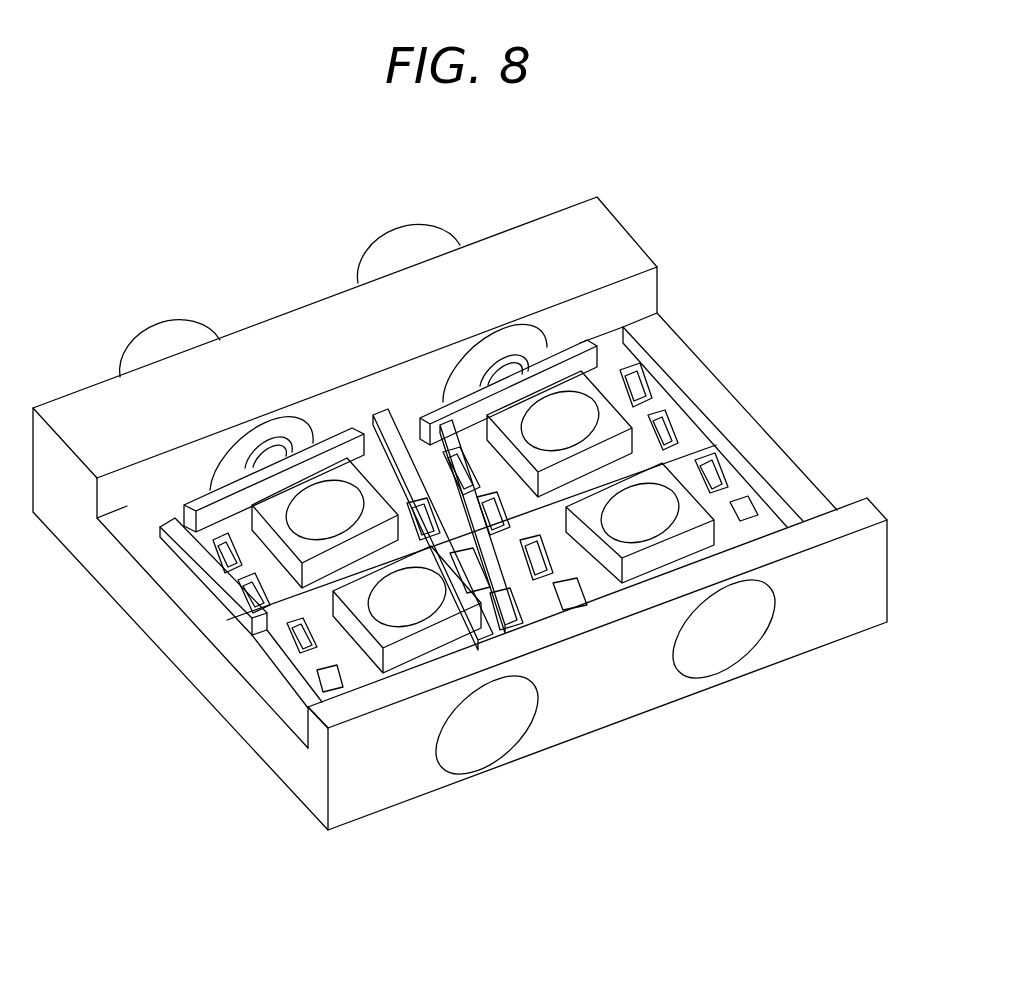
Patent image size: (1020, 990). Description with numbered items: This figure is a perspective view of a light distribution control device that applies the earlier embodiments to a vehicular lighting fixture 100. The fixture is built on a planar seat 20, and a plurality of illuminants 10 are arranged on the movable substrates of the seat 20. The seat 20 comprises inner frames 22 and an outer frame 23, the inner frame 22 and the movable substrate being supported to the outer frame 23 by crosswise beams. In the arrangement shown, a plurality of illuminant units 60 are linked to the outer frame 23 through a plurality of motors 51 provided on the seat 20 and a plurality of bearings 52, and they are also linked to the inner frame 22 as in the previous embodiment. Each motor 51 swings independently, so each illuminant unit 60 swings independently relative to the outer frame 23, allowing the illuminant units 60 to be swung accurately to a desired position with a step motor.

The vehicular lighting fixture 100 is at (745, 160).
The seat 20 is at (502, 248).
The inner frame 22 is at (357, 665).
The outer frame 23 is at (283, 657).
The illuminant 10 is at (280, 647).
The motor 51 is at (387, 262).
The bearing 52 is at (713, 643).
The illuminant unit 60 is at (652, 453).